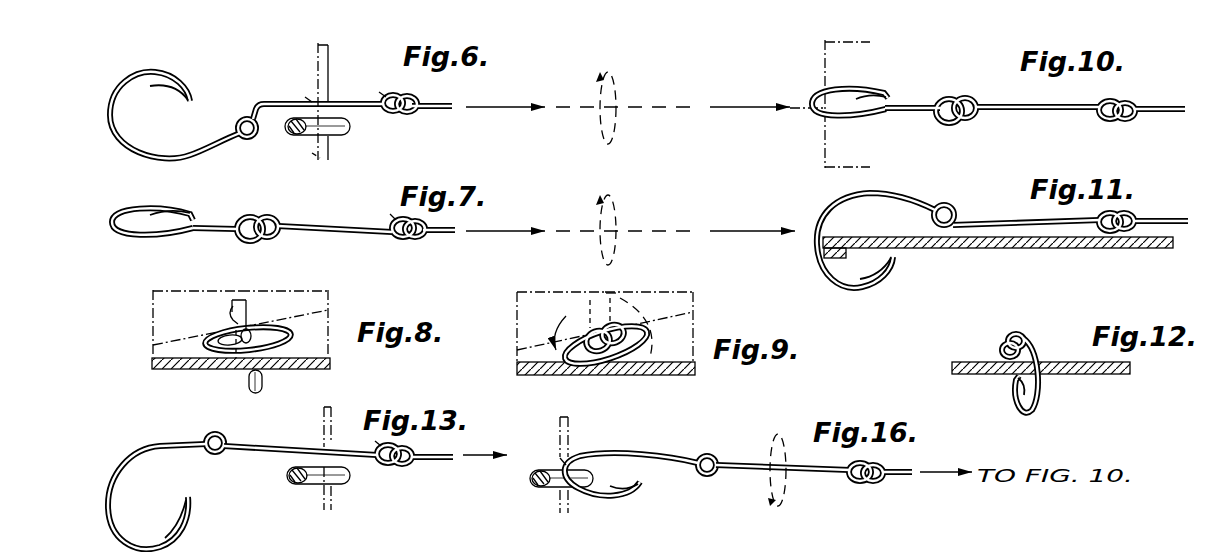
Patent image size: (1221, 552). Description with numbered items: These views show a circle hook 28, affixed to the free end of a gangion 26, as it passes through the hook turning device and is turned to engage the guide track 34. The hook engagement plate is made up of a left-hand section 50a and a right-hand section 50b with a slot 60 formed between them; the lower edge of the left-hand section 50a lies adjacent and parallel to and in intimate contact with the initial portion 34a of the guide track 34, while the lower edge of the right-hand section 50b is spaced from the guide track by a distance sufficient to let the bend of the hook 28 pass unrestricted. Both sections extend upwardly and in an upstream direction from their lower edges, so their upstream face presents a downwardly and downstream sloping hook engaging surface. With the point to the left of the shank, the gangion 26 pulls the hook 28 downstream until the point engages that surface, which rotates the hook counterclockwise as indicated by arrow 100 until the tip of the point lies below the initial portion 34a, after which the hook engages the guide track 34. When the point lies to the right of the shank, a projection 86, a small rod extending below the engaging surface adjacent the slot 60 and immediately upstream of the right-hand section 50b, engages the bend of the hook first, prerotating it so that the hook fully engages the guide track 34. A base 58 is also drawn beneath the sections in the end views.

In FIG. 6, the gangion 26 is at (430, 108).
In FIG. 10, the gangion 26 is at (1010, 102).
In FIG. 7, the gangion 26 is at (312, 228).
In FIG. 11, the gangion 26 is at (1070, 222).
In FIG. 13, the gangion 26 is at (365, 452).
In FIG. 16, the gangion 26 is at (815, 480).
In FIG. 6, the circle hook 28 is at (200, 148).
In FIG. 10, the circle hook 28 is at (873, 92).
In FIG. 7, the circle hook 28 is at (152, 221).
In FIG. 11, the circle hook 28 is at (890, 197).
In FIG. 8, the circle hook 28 is at (235, 352).
In FIG. 9, the circle hook 28 is at (633, 343).
In FIG. 12, the circle hook 28 is at (1030, 336).
In FIG. 13, the circle hook 28 is at (137, 482).
In FIG. 16, the circle hook 28 is at (623, 458).
In FIG. 10, the guide track 34 is at (842, 62).
In FIG. 11, the guide track 34 is at (990, 249).
In FIG. 12, the guide track 34 is at (1080, 377).
In FIG. 11, the initial portion of the guide track 34a is at (843, 257).
In FIG. 6, the left-hand section of the hook engagement plate 50a is at (330, 64).
In FIG. 8, the left-hand section of the hook engagement plate 50a is at (166, 290).
In FIG. 9, the left-hand section of the hook engagement plate 50a is at (517, 300).
In FIG. 13, the left-hand section of the hook engagement plate 50a is at (321, 432).
In FIG. 16, the left-hand section of the hook engagement plate 50a is at (572, 431).
In FIG. 6, the right-hand section of the hook engagement plate 50b is at (312, 154).
In FIG. 8, the right-hand section of the hook engagement plate 50b is at (305, 292).
In FIG. 9, the right-hand section of the hook engagement plate 50b is at (695, 291).
In FIG. 13, the right-hand section of the hook engagement plate 50b is at (316, 501).
In FIG. 16, the right-hand section of the hook engagement plate 50b is at (556, 506).
In FIG. 8, the base plate 58 is at (196, 372).
In FIG. 9, the base plate 58 is at (544, 366).
In FIG. 6, the slot 60 is at (305, 96).
In FIG. 8, the slot 60 is at (237, 300).
In FIG. 9, the slot 60 is at (603, 312).
In FIG. 16, the slot 60 is at (560, 458).
In FIG. 6, the projection 86 is at (350, 128).
In FIG. 8, the projection 86 is at (268, 385).
In FIG. 13, the projection 86 is at (350, 481).
In FIG. 16, the projection 86 is at (590, 490).
In FIG. 6, the arrow 100 is at (622, 82).
In FIG. 7, the arrow 100 is at (630, 230).
In FIG. 9, the arrow 100 is at (571, 303).
In FIG. 16, the arrow 100 is at (778, 440).